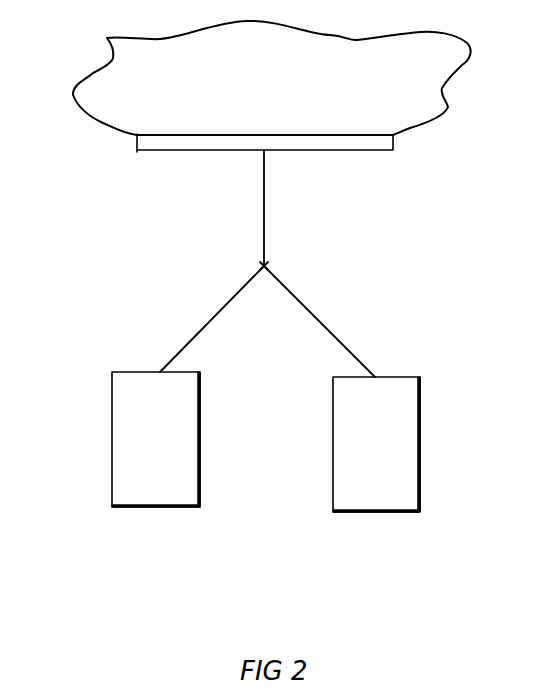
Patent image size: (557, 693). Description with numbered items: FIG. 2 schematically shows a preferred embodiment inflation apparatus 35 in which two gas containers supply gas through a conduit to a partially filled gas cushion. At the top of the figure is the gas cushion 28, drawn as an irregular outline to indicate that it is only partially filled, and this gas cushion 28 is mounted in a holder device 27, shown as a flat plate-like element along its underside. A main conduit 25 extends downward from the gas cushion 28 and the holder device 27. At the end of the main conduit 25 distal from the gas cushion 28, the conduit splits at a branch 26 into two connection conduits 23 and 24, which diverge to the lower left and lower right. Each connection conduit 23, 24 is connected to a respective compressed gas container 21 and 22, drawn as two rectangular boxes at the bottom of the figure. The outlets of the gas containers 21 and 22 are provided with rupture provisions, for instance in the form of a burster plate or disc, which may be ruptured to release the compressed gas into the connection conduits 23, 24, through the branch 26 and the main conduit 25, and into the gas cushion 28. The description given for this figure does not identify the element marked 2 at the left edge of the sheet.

The inflation apparatus 35 is at (44, 96).
The gas cushion 28 is at (435, 103).
The holder device 27 is at (393, 148).
The main conduit 25 is at (266, 200).
The branch 26 is at (266, 265).
The connection conduit 23 is at (206, 320).
The connection conduit 24 is at (326, 318).
The compressed gas container 21 is at (112, 476).
The compressed gas container 22 is at (420, 465).
The element 2 is at (0, 462).